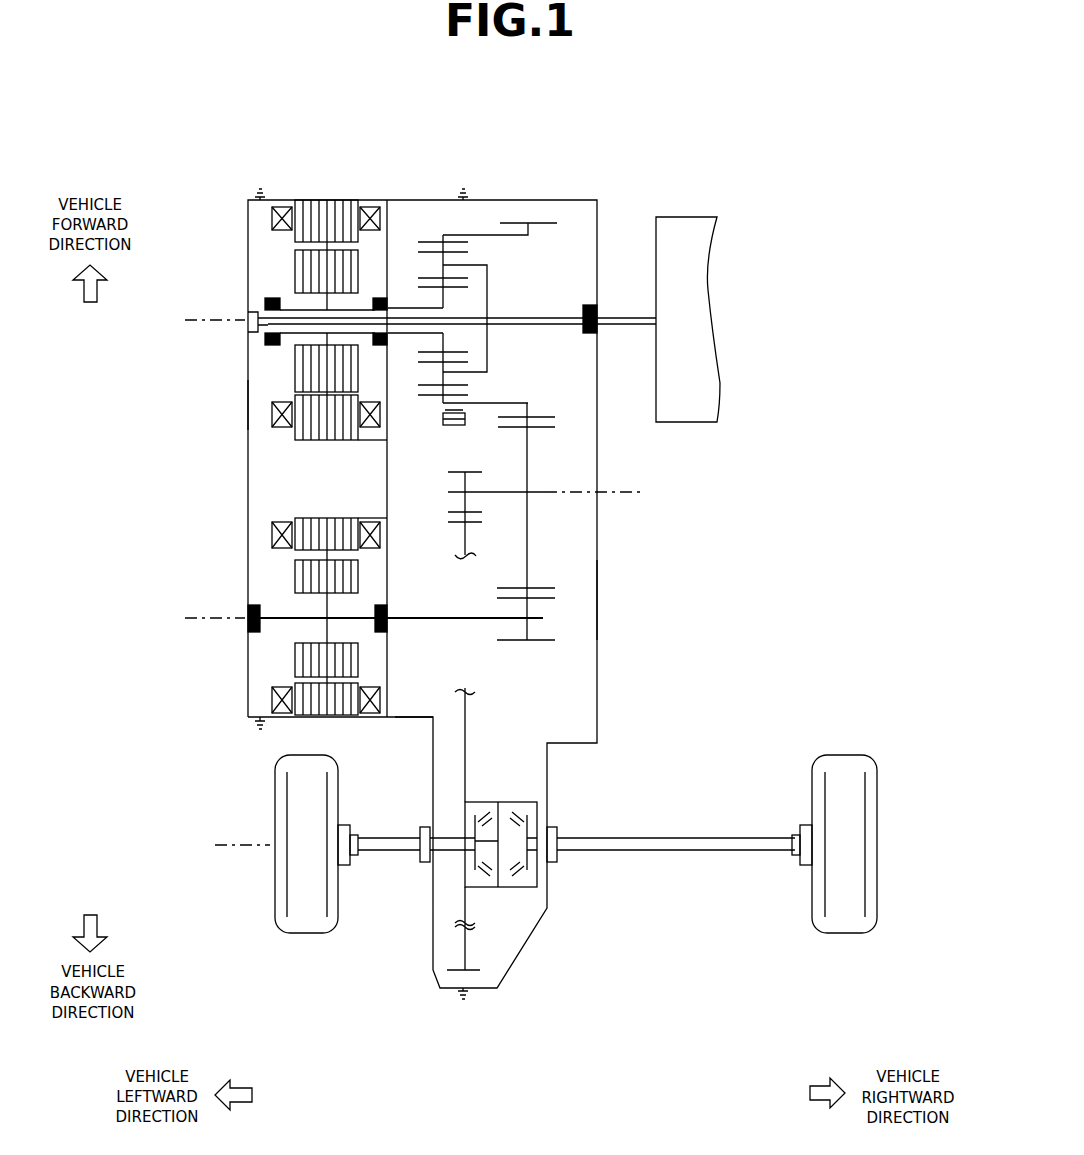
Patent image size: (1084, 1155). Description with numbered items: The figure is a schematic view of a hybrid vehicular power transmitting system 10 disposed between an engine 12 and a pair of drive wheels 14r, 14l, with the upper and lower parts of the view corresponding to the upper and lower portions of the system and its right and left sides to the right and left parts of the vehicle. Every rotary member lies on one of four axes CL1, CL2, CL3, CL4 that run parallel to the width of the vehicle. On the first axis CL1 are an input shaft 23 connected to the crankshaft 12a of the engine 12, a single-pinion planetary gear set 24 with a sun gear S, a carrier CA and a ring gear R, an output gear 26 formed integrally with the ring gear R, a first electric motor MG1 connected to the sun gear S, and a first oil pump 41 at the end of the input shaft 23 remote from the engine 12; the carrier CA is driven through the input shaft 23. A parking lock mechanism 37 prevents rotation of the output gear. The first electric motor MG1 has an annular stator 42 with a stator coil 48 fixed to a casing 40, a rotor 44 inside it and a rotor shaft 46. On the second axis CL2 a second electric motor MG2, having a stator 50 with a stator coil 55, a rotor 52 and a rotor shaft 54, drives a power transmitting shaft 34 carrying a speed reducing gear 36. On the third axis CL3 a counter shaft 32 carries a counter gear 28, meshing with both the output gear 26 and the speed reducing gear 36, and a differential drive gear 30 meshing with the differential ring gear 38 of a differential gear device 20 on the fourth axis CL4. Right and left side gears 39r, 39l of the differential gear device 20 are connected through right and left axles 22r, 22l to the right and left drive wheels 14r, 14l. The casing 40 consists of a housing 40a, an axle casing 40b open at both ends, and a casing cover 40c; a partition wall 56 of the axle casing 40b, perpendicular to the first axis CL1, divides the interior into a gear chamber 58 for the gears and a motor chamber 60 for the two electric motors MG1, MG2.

The power transmitting system 10 is at (702, 118).
The engine 12 is at (705, 422).
The crankshaft 12a is at (620, 316).
The left drive wheel 14l is at (310, 928).
The right drive wheel 14r is at (846, 928).
The differential gear device 20 is at (568, 888).
The left axle 22l is at (385, 837).
The right axle 22r is at (690, 837).
The input shaft 23 is at (520, 317).
The planetary gear set 24 is at (428, 197).
The output gear 26 is at (515, 222).
The counter gear 28 is at (502, 428).
The differential drive gear 30 is at (470, 472).
The counter shaft 32 is at (508, 496).
The power transmitting shaft 34 is at (420, 622).
The speed reducing gear 36 is at (515, 642).
The parking lock mechanism 37 is at (447, 428).
The differential ring gear 38 is at (455, 512).
The left side gear 39l is at (440, 848).
The right side gear 39r is at (555, 835).
The casing 40 is at (562, 196).
The housing 40a is at (599, 602).
The axle casing 40b is at (412, 720).
The casing cover 40c is at (246, 408).
The first oil pump 41 is at (250, 315).
The stator 42 is at (327, 206).
The rotor 44 is at (300, 280).
The rotor shaft 46 is at (292, 342).
The stator coil 48 is at (283, 206).
The stator 50 is at (322, 716).
The rotor 52 is at (295, 662).
The rotor shaft 54 is at (280, 617).
The stator coil 55 is at (275, 702).
The partition wall 56 is at (385, 492).
The gear chamber 58 is at (562, 458).
The motor chamber 60 is at (280, 465).
The first electric motor MG1 is at (290, 301).
The second electric motor MG2 is at (291, 598).
The sun gear S is at (430, 358).
The ring gear R is at (430, 398).
The carrier CA is at (487, 272).
The first axis CL1 is at (190, 326).
The second axis CL2 is at (188, 624).
The third axis CL3 is at (600, 494).
The fourth axis CL4 is at (225, 848).